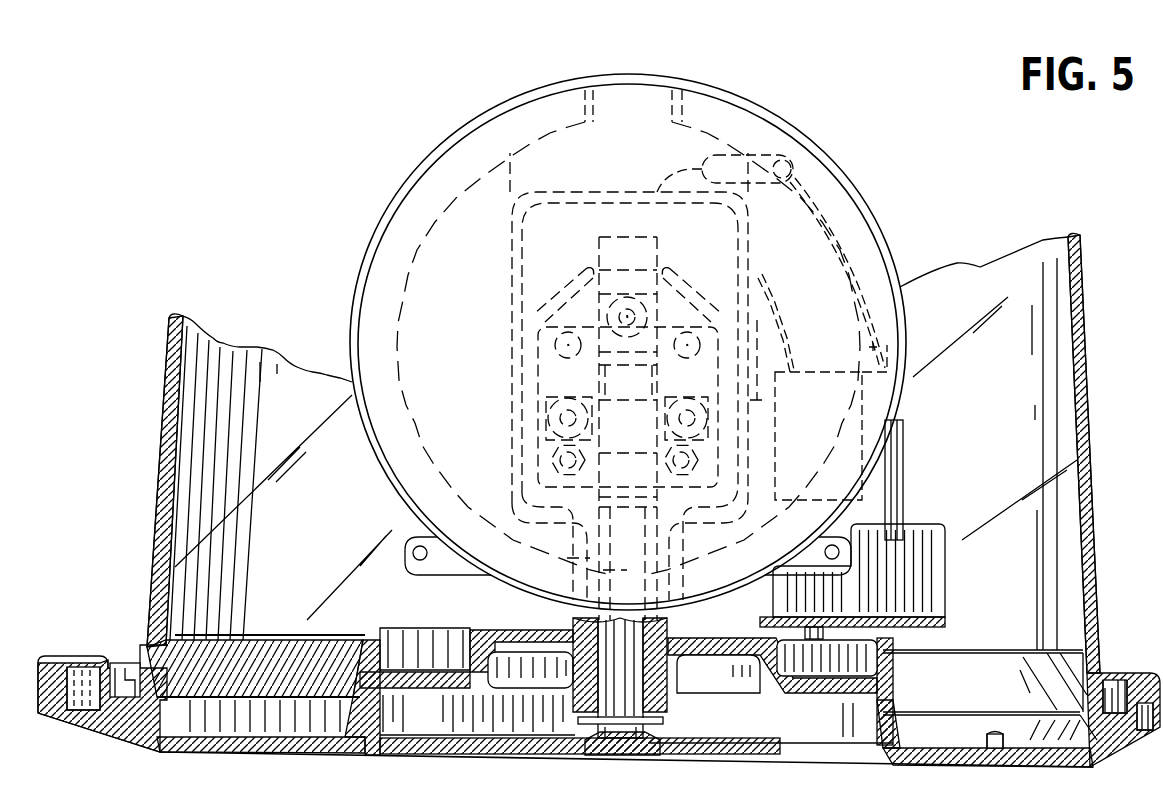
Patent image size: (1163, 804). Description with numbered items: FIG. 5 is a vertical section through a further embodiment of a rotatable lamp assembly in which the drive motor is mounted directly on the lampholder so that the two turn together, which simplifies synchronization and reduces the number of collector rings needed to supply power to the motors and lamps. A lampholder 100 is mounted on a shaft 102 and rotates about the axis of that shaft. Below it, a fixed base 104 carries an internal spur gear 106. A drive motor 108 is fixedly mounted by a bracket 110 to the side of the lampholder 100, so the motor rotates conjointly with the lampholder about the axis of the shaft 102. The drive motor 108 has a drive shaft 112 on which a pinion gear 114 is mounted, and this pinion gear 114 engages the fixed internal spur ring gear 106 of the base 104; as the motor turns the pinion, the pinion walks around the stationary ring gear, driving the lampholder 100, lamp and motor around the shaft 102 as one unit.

The lampholder 100 is at (510, 303).
The shaft 102 is at (617, 680).
The fixed base 104 is at (455, 695).
The internal spur gear 106 is at (395, 642).
The drive motor 108 is at (903, 457).
The bracket 110 is at (796, 300).
The drive shaft 112 is at (800, 695).
The pinion gear 114 is at (830, 630).